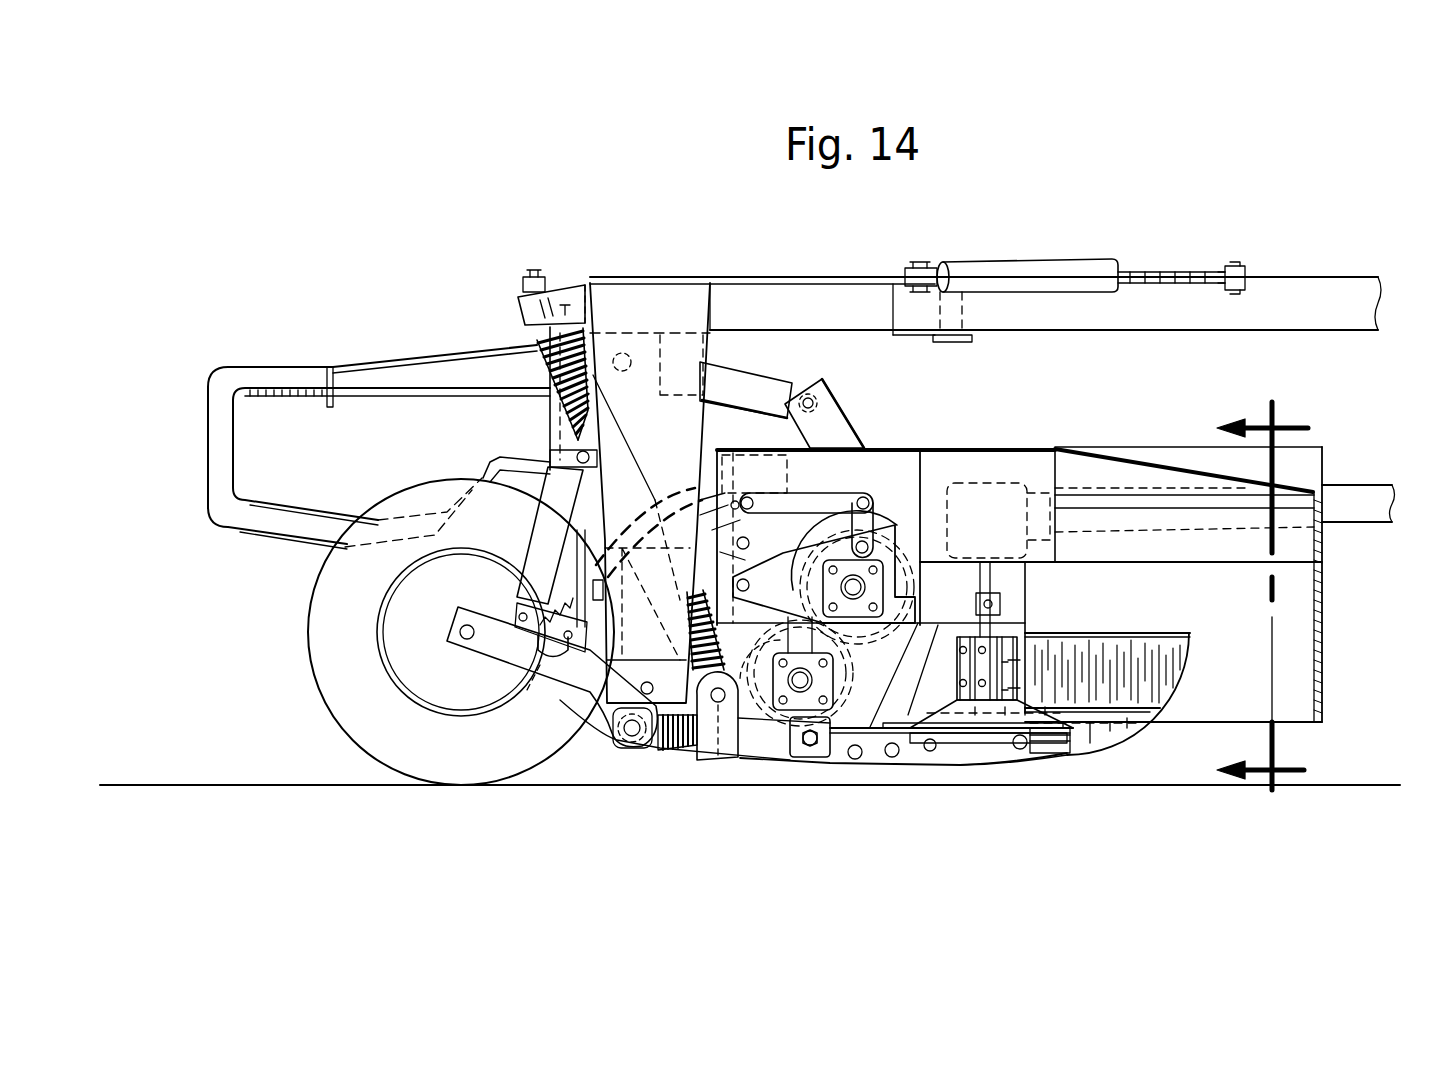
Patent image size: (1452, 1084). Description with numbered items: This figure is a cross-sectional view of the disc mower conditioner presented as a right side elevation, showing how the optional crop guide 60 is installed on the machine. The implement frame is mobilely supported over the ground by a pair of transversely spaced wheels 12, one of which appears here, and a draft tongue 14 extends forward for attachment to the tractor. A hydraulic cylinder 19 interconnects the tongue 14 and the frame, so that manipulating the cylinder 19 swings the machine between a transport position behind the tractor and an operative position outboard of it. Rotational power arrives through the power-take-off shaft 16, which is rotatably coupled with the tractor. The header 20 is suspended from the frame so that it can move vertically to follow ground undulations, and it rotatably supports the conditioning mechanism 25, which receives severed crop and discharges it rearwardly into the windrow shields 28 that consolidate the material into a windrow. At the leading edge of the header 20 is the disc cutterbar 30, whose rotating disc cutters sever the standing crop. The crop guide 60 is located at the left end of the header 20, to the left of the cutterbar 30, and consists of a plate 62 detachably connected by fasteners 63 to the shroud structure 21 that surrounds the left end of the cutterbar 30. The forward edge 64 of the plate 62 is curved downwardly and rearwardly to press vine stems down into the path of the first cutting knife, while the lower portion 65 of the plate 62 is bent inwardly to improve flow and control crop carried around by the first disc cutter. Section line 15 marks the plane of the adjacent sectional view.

The wheels 12 is at (347, 703).
The draft tongue 14 is at (1297, 288).
The section line 15- 15 is at (1269, 592).
The power-take-off (PTO) shaft 16 is at (1352, 487).
The hydraulic cylinder 19 is at (1030, 268).
The header 20 is at (905, 428).
The shroud structure 21 is at (913, 683).
The conditioning mechanism 25 is at (762, 630).
The windrow shields 28 is at (250, 367).
The disc cutterbar 30 is at (1035, 770).
The crop guide 60 is at (1173, 667).
The plate 62 is at (1148, 632).
The fasteners 63 is at (1020, 700).
The forward edge 64 is at (1165, 708).
The lower portion 65 is at (1100, 753).